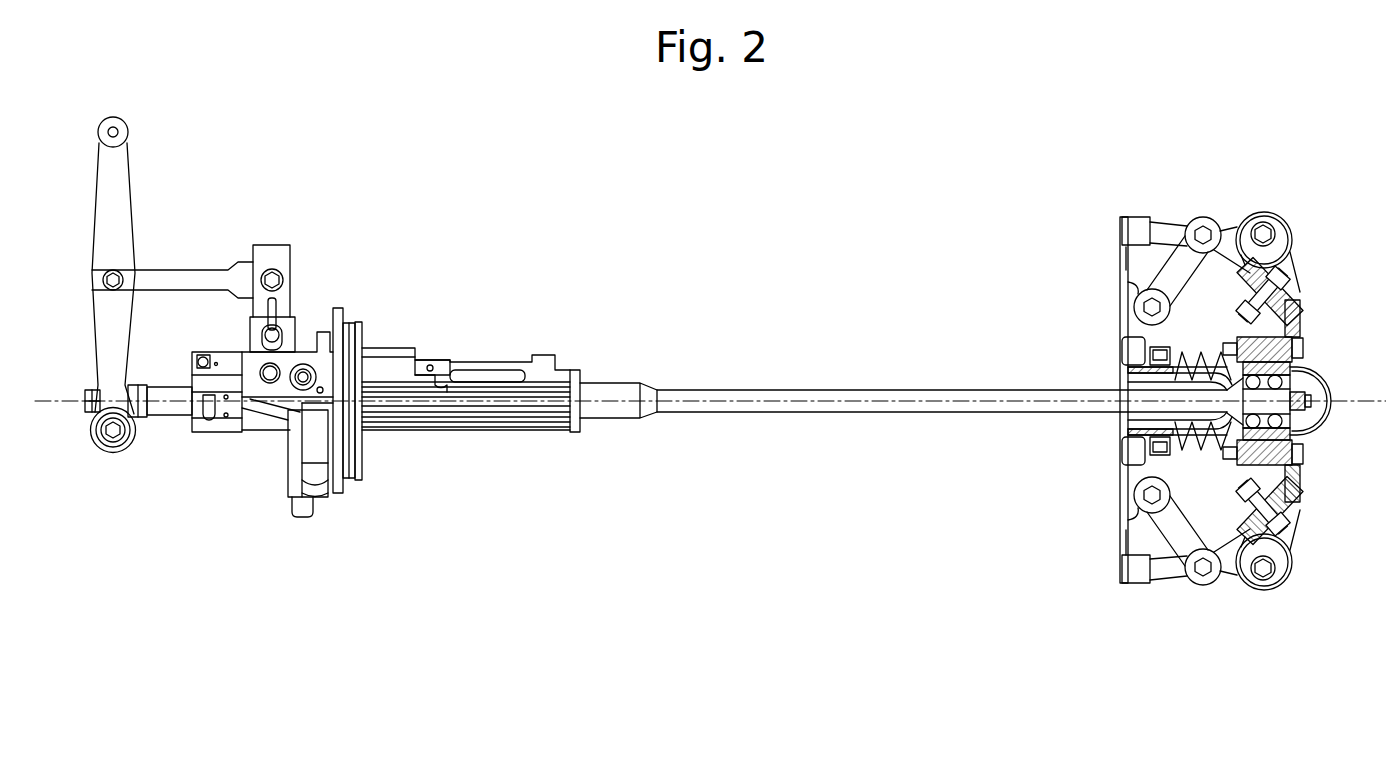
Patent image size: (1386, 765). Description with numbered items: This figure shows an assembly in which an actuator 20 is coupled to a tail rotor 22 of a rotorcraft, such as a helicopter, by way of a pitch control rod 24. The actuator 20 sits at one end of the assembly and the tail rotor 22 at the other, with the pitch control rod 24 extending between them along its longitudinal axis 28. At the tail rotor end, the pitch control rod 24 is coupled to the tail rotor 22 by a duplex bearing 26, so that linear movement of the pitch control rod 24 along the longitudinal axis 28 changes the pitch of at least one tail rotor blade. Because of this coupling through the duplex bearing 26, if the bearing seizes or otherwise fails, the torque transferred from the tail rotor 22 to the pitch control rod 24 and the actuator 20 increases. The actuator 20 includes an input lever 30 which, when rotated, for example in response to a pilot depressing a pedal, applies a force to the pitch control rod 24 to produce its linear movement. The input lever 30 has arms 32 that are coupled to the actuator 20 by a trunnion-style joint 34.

The actuator 20 is at (325, 183).
The tail rotor 22 is at (1310, 207).
The pitch control rod 24 is at (793, 390).
The duplex bearing 26 is at (1300, 418).
The longitudinal axis 28 is at (1357, 398).
The input lever 30 is at (107, 317).
The arms 32 is at (113, 380).
The trunnion-style joint 34 is at (67, 428).